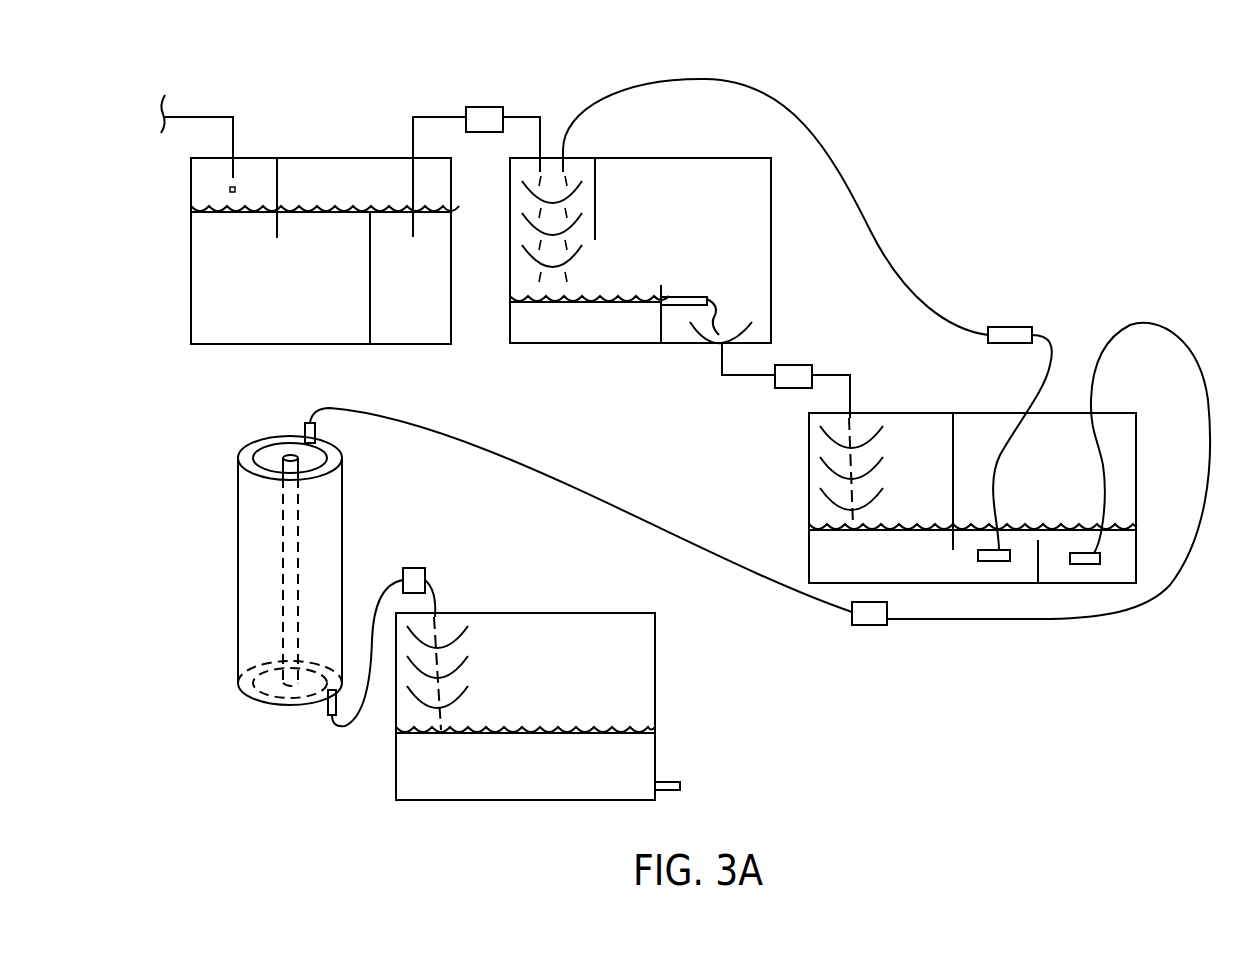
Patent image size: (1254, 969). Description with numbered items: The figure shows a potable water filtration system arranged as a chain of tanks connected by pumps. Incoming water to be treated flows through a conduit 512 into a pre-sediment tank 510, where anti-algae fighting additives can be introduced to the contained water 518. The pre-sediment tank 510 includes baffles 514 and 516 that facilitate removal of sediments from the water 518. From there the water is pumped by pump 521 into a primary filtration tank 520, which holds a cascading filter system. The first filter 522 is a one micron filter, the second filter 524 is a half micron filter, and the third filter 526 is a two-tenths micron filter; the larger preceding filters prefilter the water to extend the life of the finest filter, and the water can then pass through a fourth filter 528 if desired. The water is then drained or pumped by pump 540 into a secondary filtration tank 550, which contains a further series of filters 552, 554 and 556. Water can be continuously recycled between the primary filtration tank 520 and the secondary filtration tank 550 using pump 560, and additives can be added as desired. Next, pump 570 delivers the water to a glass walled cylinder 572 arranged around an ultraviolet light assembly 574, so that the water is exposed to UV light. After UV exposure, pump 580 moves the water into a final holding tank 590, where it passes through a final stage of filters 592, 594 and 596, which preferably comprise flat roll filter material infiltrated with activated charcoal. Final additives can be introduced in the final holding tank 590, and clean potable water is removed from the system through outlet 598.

The pre-sediment tank 510 is at (302, 344).
The conduit 512 is at (198, 114).
The baffle 514 is at (278, 172).
The baffle 516 is at (372, 261).
The water 518 is at (289, 299).
The primary filtration tank 520 is at (772, 264).
The pump 521 is at (484, 106).
The first filter 522 is at (580, 187).
The second filter 524 is at (580, 220).
The third filter 526 is at (580, 250).
The fourth filter 528 is at (750, 322).
The pump 540 is at (796, 364).
The secondary filtration tank 550 is at (1138, 461).
The filter 552 is at (880, 425).
The filter 554 is at (880, 457).
The filter 556 is at (880, 487).
The pump 560 is at (1003, 326).
The pump 570 is at (868, 626).
The glass walled cylinder 572 is at (343, 497).
The ultraviolet light assembly 574 is at (282, 462).
The pump 580 is at (418, 567).
The final holding tank 590 is at (656, 646).
The filter 592 is at (468, 628).
The filter 594 is at (468, 658).
The filter 596 is at (468, 688).
The outlet 598 is at (670, 781).